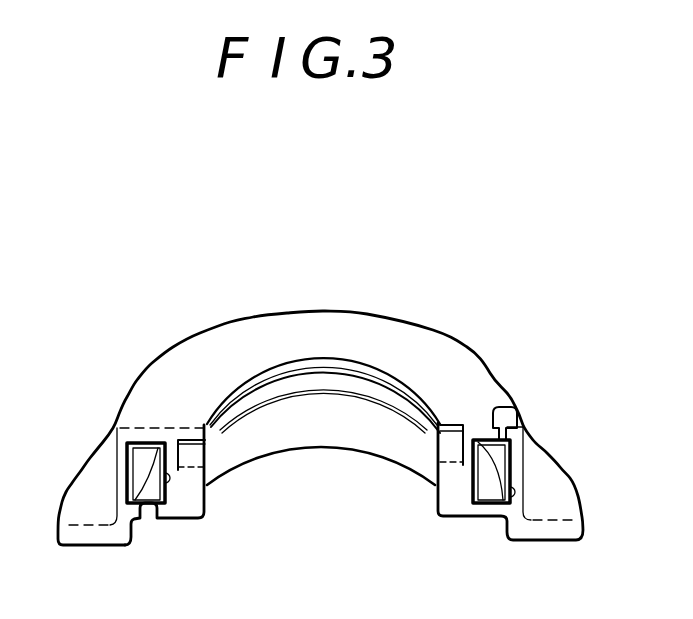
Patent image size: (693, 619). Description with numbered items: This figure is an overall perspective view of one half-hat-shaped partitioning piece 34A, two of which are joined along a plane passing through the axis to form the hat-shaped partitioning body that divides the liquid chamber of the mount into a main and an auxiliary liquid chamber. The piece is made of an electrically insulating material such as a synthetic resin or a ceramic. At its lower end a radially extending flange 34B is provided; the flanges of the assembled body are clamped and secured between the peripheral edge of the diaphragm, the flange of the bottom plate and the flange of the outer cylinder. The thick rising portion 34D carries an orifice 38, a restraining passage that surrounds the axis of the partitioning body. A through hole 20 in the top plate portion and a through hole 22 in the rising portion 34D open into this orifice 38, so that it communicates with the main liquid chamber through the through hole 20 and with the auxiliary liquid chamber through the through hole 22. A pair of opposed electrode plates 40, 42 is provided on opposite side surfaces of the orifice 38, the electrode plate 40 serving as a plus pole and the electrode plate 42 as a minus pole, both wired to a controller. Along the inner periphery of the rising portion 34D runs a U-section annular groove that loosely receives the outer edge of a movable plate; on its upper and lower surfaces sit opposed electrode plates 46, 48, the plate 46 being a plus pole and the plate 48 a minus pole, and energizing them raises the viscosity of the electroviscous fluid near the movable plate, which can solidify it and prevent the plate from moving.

The partitioning piece 34A is at (336, 312).
The flange 34B is at (562, 503).
The rising portion 34D is at (114, 428).
The through hole 20 is at (519, 402).
The through hole 22 is at (147, 519).
The orifice 38 is at (497, 496).
The electrode plate 40 is at (128, 483).
The electrode plate 42 is at (176, 508).
The electrode plate 46 is at (191, 440).
The electrode plate 48 is at (193, 470).